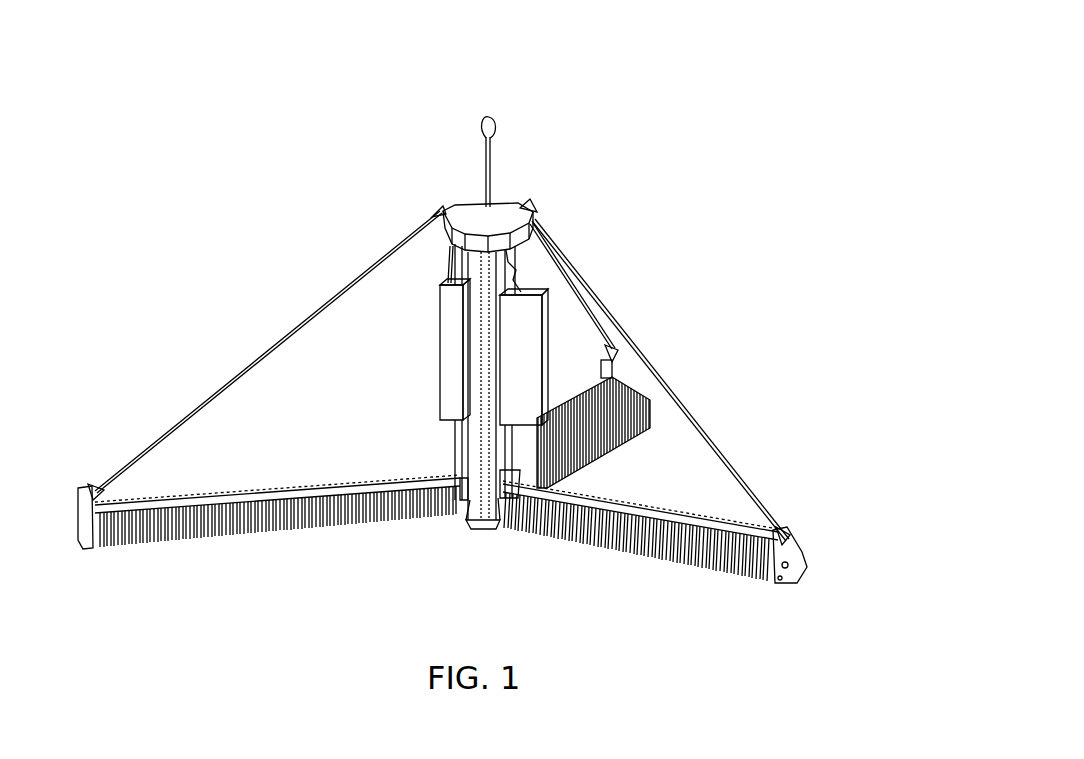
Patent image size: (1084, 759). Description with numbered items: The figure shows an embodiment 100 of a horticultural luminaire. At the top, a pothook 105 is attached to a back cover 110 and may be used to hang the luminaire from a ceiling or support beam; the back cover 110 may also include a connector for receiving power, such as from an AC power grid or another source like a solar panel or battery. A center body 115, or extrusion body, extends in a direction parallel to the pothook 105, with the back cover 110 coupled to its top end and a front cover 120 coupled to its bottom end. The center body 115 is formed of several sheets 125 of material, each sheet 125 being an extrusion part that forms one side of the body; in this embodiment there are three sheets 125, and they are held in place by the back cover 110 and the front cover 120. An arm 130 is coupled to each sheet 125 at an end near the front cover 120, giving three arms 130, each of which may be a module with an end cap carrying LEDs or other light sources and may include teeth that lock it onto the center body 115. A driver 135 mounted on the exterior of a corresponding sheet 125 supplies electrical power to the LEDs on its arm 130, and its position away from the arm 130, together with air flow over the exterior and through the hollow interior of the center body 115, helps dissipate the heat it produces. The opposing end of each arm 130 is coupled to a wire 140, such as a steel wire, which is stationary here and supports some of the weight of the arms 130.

The horticultural luminaire embodiment 100 is at (660, 86).
The pothook 105 is at (492, 168).
The back cover 110 is at (470, 197).
The center body 115 is at (456, 250).
The front cover 120 is at (480, 527).
The sheet 125 is at (463, 440).
The arm 130 is at (300, 535).
The driver 135 is at (440, 350).
The wire 140 is at (295, 330).